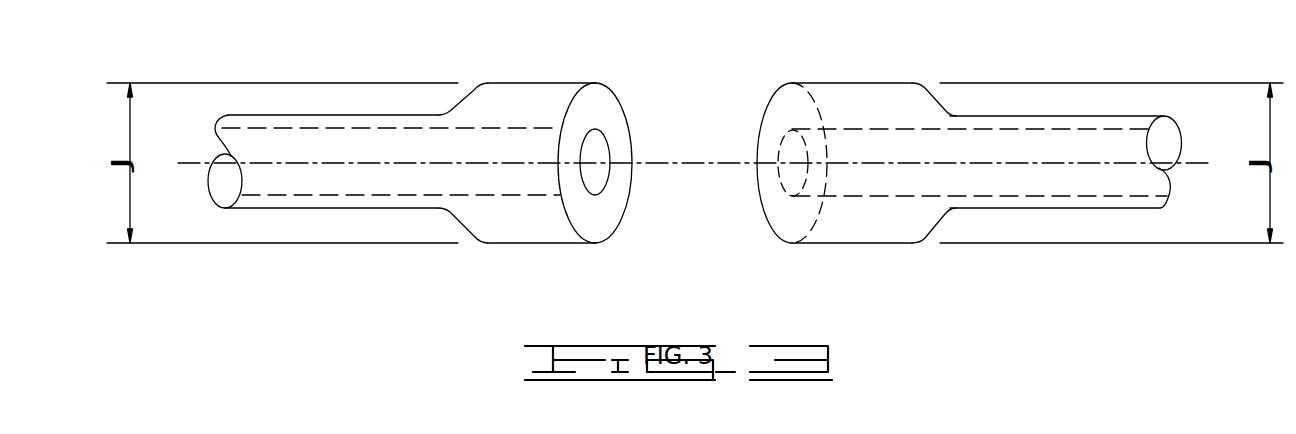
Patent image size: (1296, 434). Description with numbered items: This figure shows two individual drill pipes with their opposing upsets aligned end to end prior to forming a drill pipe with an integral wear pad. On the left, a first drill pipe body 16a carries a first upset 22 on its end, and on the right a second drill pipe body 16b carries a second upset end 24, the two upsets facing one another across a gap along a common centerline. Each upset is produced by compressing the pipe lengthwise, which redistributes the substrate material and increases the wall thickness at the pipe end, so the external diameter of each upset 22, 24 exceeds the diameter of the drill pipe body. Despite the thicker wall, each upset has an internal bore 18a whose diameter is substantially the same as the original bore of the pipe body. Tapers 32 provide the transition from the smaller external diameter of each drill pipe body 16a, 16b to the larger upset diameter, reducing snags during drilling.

The first drill pipe body 16a is at (300, 208).
The second drill pipe body 16b is at (1086, 117).
The internal bore 18a is at (605, 154).
The first upset 22 is at (513, 246).
The second upset end 24 is at (852, 82).
The first taper 32 is at (453, 102).